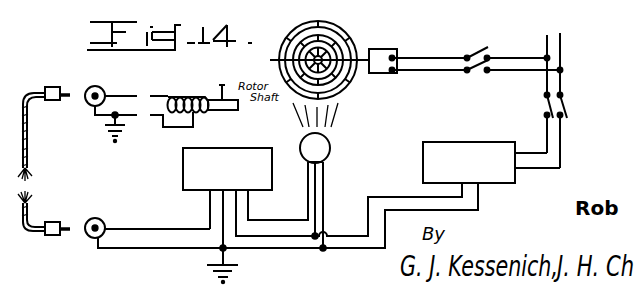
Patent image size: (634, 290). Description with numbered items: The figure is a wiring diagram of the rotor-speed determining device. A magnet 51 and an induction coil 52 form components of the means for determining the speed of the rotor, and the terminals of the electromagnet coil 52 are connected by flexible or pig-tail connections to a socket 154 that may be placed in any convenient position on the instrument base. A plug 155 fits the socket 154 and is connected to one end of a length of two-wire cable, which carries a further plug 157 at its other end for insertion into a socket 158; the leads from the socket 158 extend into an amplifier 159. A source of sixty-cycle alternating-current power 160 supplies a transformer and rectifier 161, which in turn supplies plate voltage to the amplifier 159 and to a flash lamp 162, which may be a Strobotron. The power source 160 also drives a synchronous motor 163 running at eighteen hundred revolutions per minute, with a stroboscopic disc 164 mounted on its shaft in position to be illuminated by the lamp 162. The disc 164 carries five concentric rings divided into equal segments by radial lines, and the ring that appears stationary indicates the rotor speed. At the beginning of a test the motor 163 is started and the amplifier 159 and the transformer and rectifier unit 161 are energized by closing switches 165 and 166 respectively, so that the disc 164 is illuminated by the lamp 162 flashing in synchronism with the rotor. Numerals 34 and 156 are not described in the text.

The rotor 34 is at (392, 8).
The magnet 51 is at (224, 110).
The induction coil 52 is at (187, 97).
The socket 154 is at (111, 91).
The plug 155 is at (50, 102).
The cable 156 is at (27, 158).
The plug 157 is at (47, 238).
The socket 158 is at (92, 238).
The amplifier 159 is at (183, 157).
The source of 60-cycle A. C. power 160 is at (560, 33).
The transformer and rectifier 161 is at (503, 185).
The flash lamp 162 is at (331, 155).
The synchronous motor 163 is at (389, 50).
The stroboscopic disc 164 is at (296, 30).
The switch 165 is at (465, 75).
The switch 166 is at (567, 108).